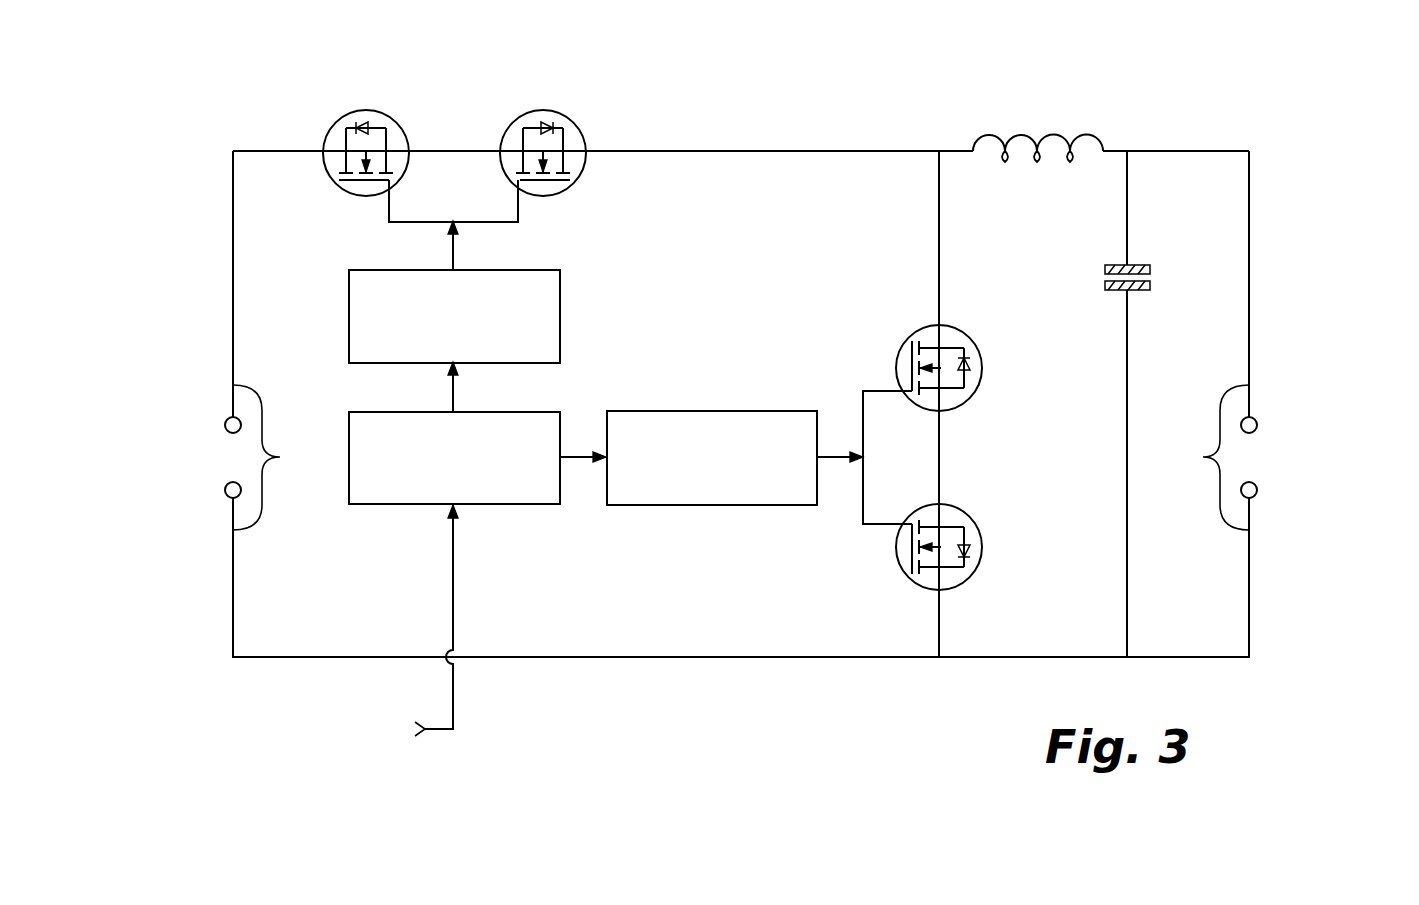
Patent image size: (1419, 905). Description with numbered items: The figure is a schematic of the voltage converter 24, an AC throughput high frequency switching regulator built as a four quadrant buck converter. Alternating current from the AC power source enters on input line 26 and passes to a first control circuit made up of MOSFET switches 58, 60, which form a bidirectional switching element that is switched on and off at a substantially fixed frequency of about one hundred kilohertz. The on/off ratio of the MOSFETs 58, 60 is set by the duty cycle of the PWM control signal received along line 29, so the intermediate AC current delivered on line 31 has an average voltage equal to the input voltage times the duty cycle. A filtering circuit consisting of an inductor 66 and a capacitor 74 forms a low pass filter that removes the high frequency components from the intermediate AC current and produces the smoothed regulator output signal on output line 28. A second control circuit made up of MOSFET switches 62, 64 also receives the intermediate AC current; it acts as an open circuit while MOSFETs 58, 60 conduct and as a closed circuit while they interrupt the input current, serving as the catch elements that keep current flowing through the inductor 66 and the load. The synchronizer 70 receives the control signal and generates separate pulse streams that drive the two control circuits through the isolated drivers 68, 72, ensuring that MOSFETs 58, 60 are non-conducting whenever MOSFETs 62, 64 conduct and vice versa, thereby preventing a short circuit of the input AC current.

The voltage converter 24 is at (761, 402).
The input line 26 is at (280, 457).
The output line 28 is at (1203, 457).
The line 29 is at (440, 730).
The line 31 is at (763, 151).
The MOSFET switch 58 is at (368, 112).
The MOSFET switch 60 is at (547, 112).
The MOSFET switch 62 is at (982, 368).
The MOSFET switch 64 is at (982, 547).
The inductor 66 is at (1085, 137).
The isolated driver 68 is at (560, 292).
The synchronizer 70 is at (503, 504).
The isolated driver 72 is at (717, 411).
The capacitor 74 is at (1105, 265).